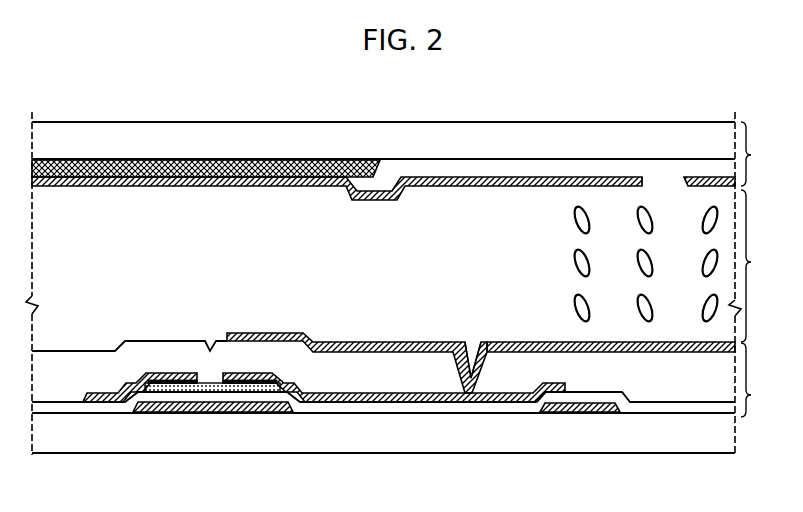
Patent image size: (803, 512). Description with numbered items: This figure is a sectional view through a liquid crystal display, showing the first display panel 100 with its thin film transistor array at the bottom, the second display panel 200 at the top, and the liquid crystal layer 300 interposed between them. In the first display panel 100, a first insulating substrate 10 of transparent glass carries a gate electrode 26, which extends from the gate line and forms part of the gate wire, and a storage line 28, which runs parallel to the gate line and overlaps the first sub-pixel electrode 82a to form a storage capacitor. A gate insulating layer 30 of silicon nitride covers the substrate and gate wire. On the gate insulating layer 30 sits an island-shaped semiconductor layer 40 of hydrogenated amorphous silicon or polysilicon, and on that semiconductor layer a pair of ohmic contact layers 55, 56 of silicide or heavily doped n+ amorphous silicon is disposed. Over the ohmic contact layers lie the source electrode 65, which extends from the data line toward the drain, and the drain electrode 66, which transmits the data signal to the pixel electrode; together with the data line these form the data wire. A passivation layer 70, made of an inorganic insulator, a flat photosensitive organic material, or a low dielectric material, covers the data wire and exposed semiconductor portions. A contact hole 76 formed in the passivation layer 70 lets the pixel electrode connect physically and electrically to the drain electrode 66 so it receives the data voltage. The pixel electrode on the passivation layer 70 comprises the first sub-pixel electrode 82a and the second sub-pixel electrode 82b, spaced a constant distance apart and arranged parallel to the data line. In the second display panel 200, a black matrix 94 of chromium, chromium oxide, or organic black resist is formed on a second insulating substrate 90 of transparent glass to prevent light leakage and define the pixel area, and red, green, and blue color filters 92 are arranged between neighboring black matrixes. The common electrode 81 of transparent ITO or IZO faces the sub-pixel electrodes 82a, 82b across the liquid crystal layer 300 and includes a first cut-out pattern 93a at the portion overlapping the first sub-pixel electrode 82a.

The first insulating substrate 10 is at (690, 428).
The gate electrode 26 is at (278, 406).
The storage line 28 is at (572, 410).
The gate insulating layer 30 is at (334, 405).
The semiconductor layer 40 is at (155, 392).
The ohmic contact layer 55 is at (188, 385).
The ohmic contact layer 56 is at (238, 385).
The source electrode 65 is at (165, 380).
The drain electrode 66 is at (255, 380).
The passivation layer 70 is at (352, 370).
The contact hole 76 is at (472, 337).
The first sub-pixel electrode 82a is at (500, 357).
The second sub-pixel electrode 82b is at (375, 350).
The common electrode 81 is at (507, 177).
The second insulating substrate 90 is at (706, 150).
The color filter 92 is at (428, 170).
The first cut-out pattern 93a is at (670, 183).
The black matrix 94 is at (309, 158).
The first display panel 100 is at (763, 380).
The second display panel 200 is at (763, 154).
The liquid crystal layer 300 is at (678, 266).